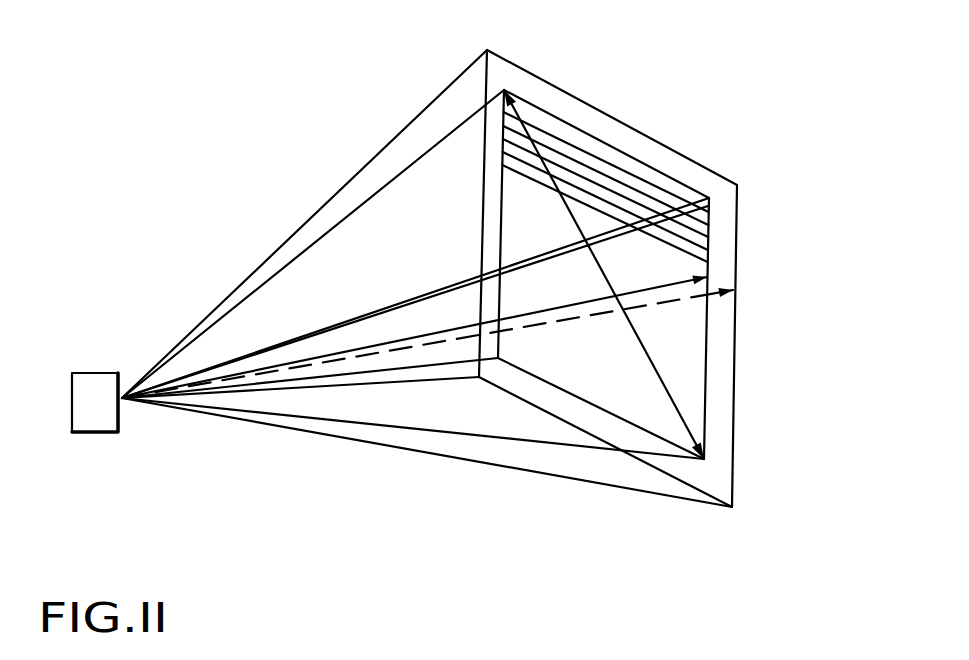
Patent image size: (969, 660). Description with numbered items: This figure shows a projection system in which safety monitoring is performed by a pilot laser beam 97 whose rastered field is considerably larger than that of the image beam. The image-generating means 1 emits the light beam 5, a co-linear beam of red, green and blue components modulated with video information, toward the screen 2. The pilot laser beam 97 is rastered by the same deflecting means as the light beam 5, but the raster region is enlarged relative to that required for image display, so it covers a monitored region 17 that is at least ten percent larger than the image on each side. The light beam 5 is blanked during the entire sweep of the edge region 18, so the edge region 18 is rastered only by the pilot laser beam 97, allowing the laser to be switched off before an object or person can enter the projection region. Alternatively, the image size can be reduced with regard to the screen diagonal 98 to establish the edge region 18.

The image-generating means 1 is at (92, 415).
The screen 2 is at (597, 158).
The light beam 5 is at (557, 308).
The monitored region 17 is at (428, 107).
The edge region 18 is at (712, 483).
The pilot laser beam 97 is at (592, 315).
The screen diagonal 98 is at (648, 355).